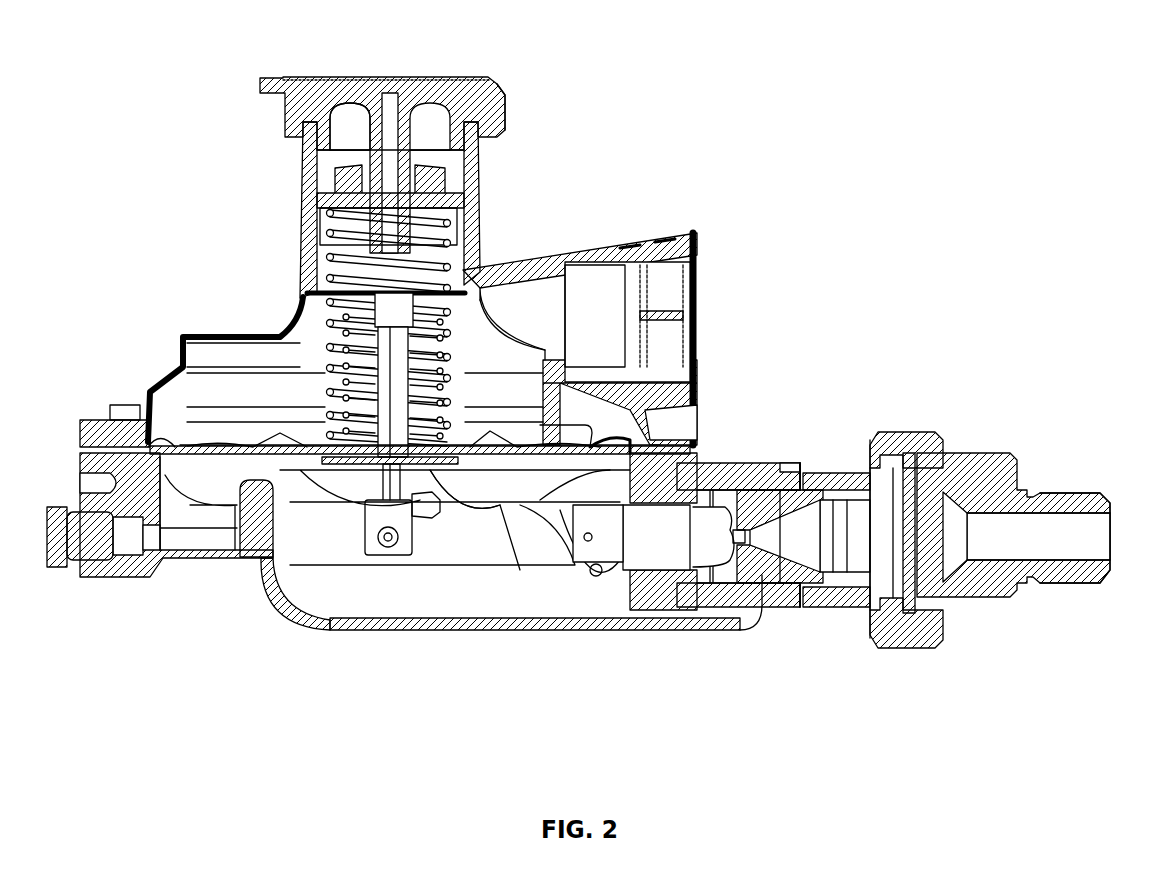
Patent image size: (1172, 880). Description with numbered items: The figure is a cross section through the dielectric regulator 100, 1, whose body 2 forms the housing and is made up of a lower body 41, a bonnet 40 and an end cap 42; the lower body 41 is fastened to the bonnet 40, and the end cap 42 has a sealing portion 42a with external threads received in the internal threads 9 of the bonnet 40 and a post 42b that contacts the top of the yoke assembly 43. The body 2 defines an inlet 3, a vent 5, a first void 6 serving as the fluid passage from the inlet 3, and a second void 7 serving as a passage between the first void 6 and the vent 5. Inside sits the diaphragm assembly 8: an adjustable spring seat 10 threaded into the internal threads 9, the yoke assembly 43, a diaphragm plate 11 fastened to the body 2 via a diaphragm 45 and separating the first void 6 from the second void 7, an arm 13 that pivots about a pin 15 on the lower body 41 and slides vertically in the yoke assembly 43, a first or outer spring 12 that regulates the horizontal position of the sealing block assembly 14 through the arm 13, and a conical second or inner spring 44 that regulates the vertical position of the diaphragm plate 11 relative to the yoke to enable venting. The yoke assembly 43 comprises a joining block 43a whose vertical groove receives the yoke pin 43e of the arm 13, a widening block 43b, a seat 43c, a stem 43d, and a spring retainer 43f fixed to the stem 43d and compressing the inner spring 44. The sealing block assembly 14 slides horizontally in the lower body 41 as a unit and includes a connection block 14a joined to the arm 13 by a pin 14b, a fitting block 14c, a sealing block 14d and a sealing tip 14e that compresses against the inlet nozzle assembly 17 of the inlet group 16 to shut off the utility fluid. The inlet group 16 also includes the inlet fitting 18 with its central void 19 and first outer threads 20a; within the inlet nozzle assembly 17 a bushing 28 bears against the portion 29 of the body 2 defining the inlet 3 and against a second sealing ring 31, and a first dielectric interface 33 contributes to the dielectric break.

The pressure regulator 100 is at (210, 52).
The regulator 1 is at (700, 226).
The body 2 is at (214, 330).
The inlet 3 is at (712, 460).
The vent 5 is at (660, 295).
The first void 6 is at (410, 597).
The second void 7 is at (487, 362).
The diaphragm assembly 8 is at (368, 562).
The internal threads 9 is at (450, 160).
The adjustable spring seat 10 is at (455, 200).
The diaphragm plate 11 is at (220, 444).
The first or outer spring 12 is at (325, 345).
The arm 13 is at (470, 558).
The sealing block assembly 14 is at (656, 582).
The connection block 14a is at (625, 527).
The pin 14b is at (556, 552).
The fitting block 14c is at (680, 570).
The sealing block 14d is at (705, 560).
The sealing tip 14e is at (722, 535).
The pin 15 is at (598, 548).
The inlet group 16 is at (930, 392).
The inlet nozzle assembly 17 is at (840, 462).
The inlet fitting 18 is at (1043, 585).
The central void 19 is at (1090, 538).
The first outer threads 20a is at (1062, 580).
The bushing 28 is at (808, 470).
The portion of body defining inlet 29 is at (752, 462).
The second sealing ring 31 is at (810, 608).
The first dielectric interface 33 is at (880, 605).
The bonnet 40 is at (658, 238).
The lower body 41 is at (383, 632).
The end cap 42 is at (392, 72).
The sealing portion 42a is at (503, 102).
The post 42b is at (340, 150).
The yoke assembly 43 is at (345, 490).
The joining block 43a is at (400, 525).
The widening block 43b is at (380, 545).
The seat 43c is at (440, 464).
The stem 43d is at (418, 425).
The yoke pin 43e is at (365, 512).
The spring retainer 43f is at (468, 258).
The second or inner spring 44 is at (332, 388).
The diaphragm 45 is at (165, 437).